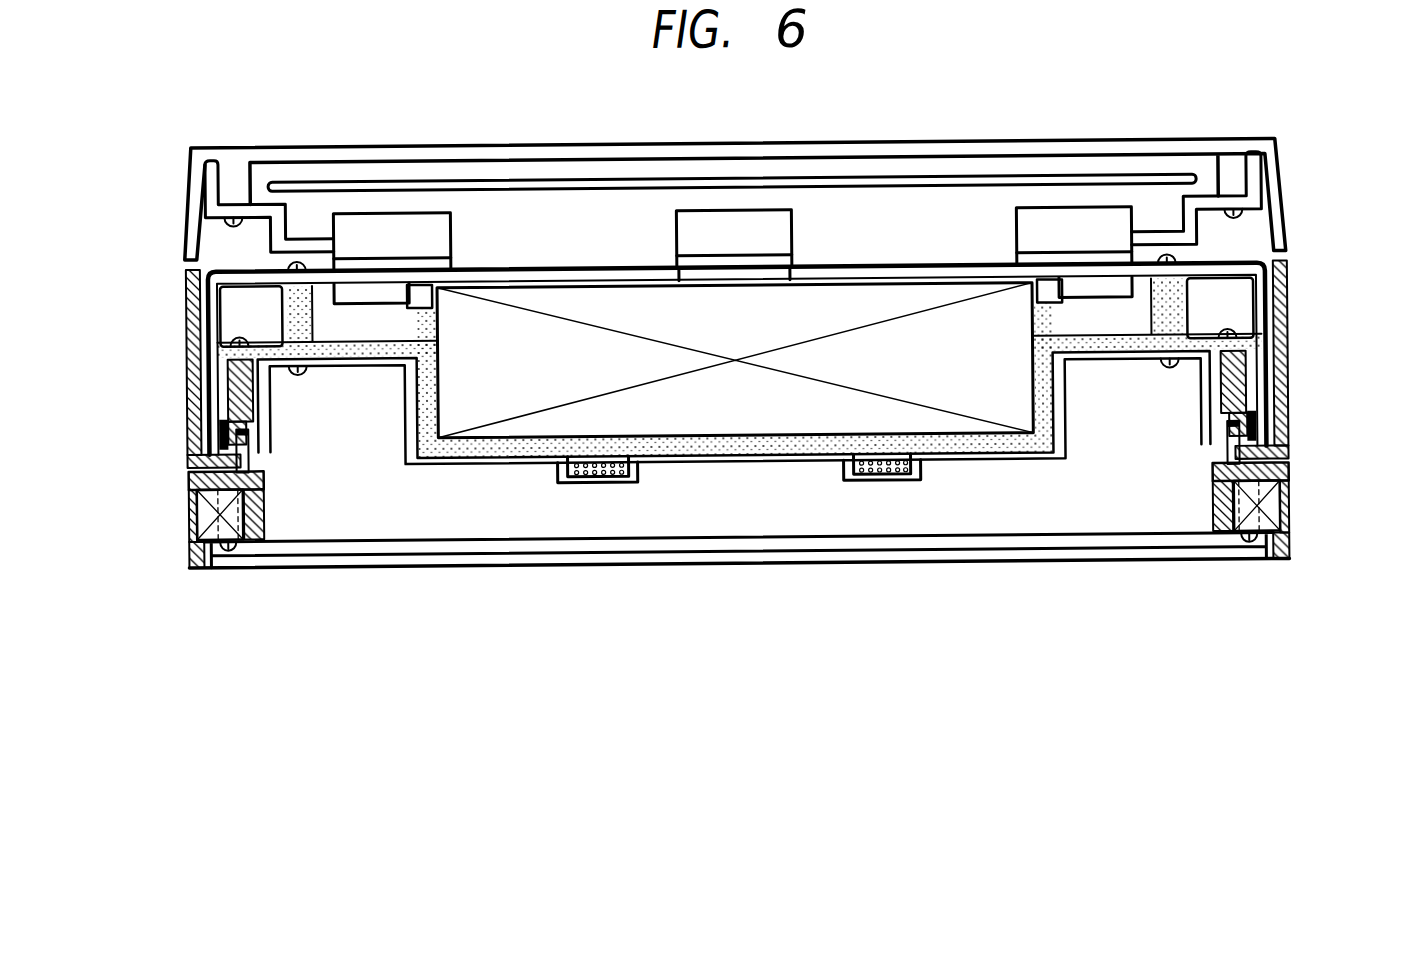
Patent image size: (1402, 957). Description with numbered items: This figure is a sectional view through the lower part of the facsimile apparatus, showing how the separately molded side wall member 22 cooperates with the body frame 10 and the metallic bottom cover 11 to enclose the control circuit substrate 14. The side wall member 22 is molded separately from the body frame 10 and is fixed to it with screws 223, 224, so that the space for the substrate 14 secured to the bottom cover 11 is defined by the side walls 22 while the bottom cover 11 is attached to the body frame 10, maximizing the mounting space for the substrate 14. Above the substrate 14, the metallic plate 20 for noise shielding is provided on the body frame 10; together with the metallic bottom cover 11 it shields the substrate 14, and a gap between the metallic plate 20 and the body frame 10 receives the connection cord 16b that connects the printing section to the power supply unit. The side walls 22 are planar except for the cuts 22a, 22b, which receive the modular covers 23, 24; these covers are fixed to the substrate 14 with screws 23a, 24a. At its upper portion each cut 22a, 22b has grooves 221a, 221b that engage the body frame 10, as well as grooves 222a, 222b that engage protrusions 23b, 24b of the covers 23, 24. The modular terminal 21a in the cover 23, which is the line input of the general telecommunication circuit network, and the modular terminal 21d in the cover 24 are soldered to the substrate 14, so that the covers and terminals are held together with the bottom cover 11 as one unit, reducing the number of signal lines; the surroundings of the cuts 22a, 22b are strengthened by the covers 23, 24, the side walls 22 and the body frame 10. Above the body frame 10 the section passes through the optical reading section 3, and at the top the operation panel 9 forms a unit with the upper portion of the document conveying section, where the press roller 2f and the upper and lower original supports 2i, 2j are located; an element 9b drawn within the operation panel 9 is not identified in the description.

The operation panel 9 is at (1170, 150).
The reinforcing plate of upper case 9b is at (613, 184).
The press roller 2f is at (753, 218).
The upper original support 2i is at (1210, 213).
The lower original support 2j is at (238, 273).
The side wall member 22 is at (190, 411).
The screw 223 is at (240, 340).
The screw 224 is at (1230, 346).
The groove 221a is at (210, 413).
The groove 221b is at (1245, 415).
The groove 222a is at (250, 456).
The groove 222b is at (1229, 460).
The cut 22a is at (187, 466).
The cut 22b is at (1288, 465).
The modular cover 23 is at (190, 480).
The screw 23a is at (228, 556).
The protrusion 23b is at (255, 479).
The modular cover 24 is at (1288, 492).
The screw 24a is at (1248, 558).
The protrusion 24b is at (1227, 486).
The modular terminal 21a is at (195, 520).
The modular terminal 21d is at (1285, 525).
The metallic plate 20 is at (1090, 370).
The body frame 10 is at (978, 462).
The optical reading section 3 is at (712, 425).
The connection cord 16b is at (612, 484).
The control circuit substrate 14 is at (460, 552).
The bottom cover 11 is at (597, 570).